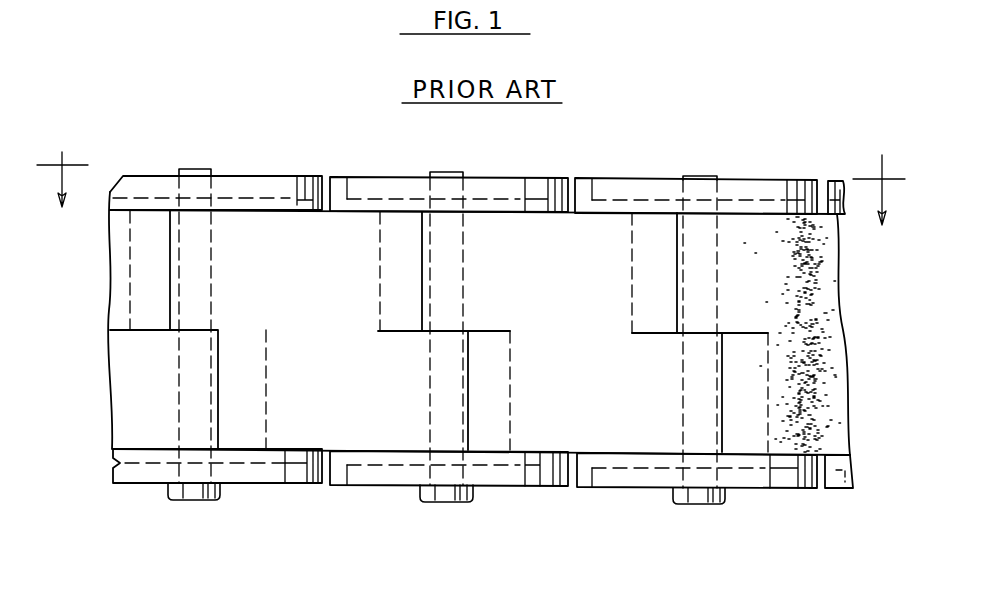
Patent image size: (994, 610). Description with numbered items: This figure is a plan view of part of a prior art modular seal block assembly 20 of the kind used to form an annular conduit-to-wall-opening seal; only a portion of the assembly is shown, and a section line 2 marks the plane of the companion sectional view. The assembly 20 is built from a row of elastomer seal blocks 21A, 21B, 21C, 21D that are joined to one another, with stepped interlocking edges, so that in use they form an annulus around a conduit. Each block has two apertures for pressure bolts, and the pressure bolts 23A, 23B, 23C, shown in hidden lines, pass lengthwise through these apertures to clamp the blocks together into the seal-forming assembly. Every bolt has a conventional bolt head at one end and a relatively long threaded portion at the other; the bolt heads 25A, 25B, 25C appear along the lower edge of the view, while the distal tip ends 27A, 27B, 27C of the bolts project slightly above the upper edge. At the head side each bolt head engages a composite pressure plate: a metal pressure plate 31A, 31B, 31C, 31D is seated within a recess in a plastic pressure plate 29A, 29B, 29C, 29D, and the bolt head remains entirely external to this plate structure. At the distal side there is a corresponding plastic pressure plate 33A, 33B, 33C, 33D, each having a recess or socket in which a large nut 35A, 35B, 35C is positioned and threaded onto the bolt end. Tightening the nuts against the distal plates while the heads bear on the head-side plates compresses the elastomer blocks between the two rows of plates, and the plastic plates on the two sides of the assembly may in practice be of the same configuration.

The seal block assembly 20 is at (745, 123).
The section line 2- 2 is at (471, 182).
The elastomer seal block 21A is at (132, 342).
The elastomer seal block 21B is at (372, 384).
The elastomer seal block 21C is at (532, 319).
The elastomer seal block 21D is at (850, 343).
The pressure bolt 23A is at (205, 264).
The pressure bolt 23B is at (458, 269).
The pressure bolt 23C is at (718, 272).
The bolt head 25A is at (198, 500).
The bolt head 25B is at (460, 502).
The bolt head 25C is at (710, 505).
The distal tip end 27A is at (197, 169).
The distal tip end 27B is at (448, 172).
The distal tip end 27C is at (713, 176).
The plastic pressure plate 29A is at (140, 472).
The plastic pressure plate 29B is at (340, 487).
The plastic pressure plate 29C is at (583, 488).
The plastic pressure plate 29D is at (833, 490).
The metal pressure plate 31A is at (108, 475).
The metal pressure plate 31B is at (382, 463).
The metal pressure plate 31C is at (643, 468).
The metal pressure plate 31D is at (858, 487).
The plastic pressure plate 33A is at (135, 176).
The plastic pressure plate 33B is at (342, 177).
The plastic pressure plate 33C is at (587, 178).
The plastic pressure plate 33D is at (830, 180).
The nut 35A is at (300, 177).
The nut 35B is at (510, 198).
The nut 35C is at (650, 199).